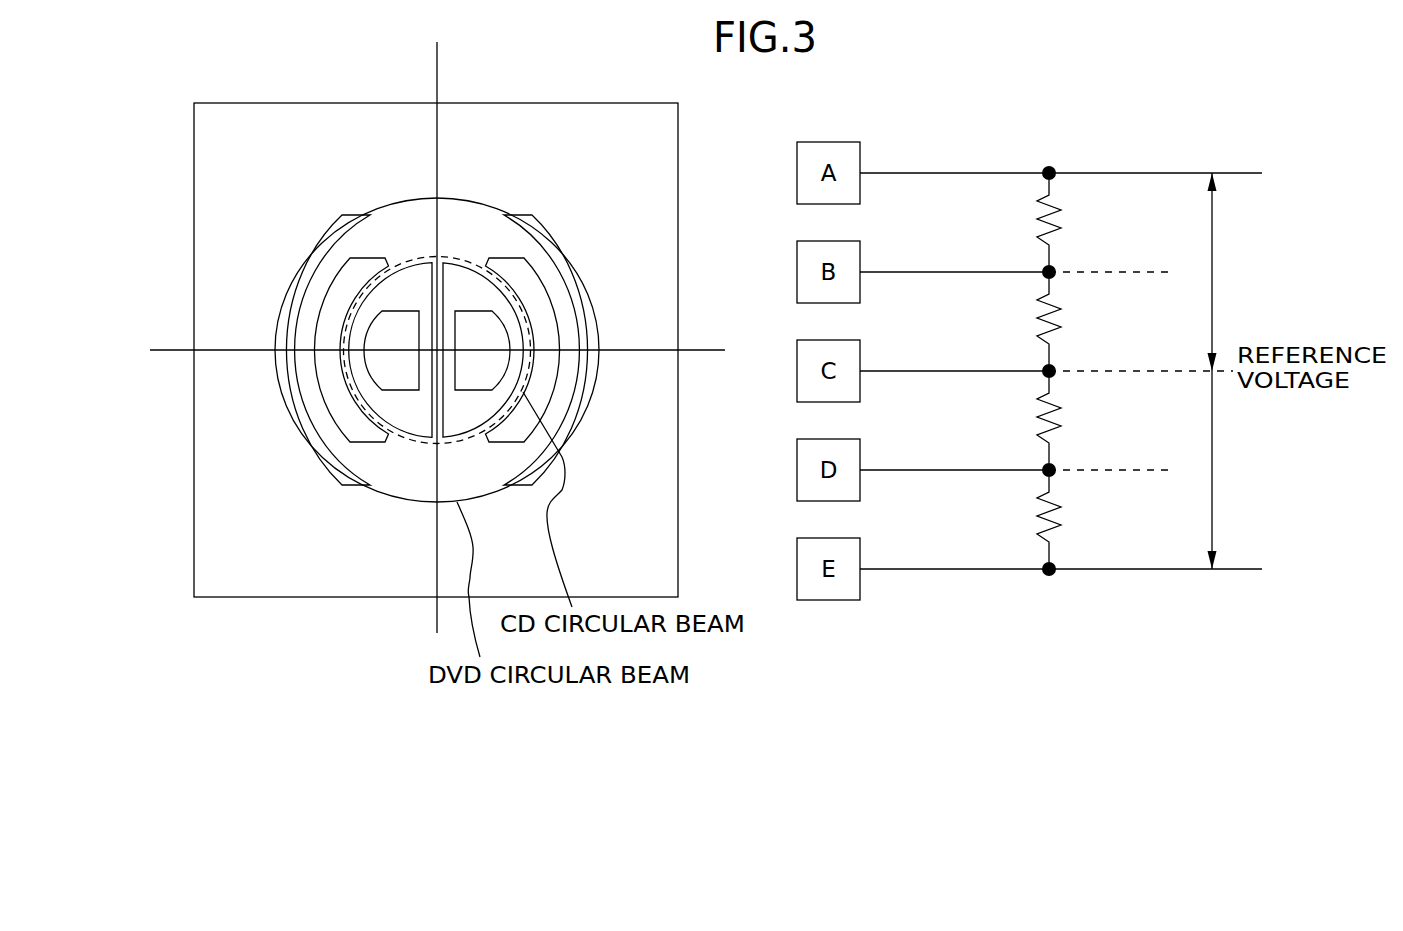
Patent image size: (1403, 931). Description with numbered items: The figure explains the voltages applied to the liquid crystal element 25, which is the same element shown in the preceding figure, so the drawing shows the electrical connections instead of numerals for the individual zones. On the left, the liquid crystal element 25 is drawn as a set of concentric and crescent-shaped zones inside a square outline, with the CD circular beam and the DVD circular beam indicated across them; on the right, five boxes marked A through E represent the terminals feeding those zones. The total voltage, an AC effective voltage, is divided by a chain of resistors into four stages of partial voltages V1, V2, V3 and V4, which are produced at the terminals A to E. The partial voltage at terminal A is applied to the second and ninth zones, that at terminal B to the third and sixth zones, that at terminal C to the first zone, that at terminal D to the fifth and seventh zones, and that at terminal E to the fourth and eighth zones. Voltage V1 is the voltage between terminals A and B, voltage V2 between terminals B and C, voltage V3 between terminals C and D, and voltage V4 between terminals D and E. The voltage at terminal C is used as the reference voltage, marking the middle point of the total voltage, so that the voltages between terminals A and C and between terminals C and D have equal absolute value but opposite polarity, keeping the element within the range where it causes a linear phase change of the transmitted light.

The liquid crystal element 25 is at (183, 609).
The terminal A is at (411, 387).
The terminal B is at (410, 423).
The terminal C is at (436, 348).
The terminal D is at (462, 277).
The terminal E is at (457, 313).
The voltage V1 is at (1123, 173).
The voltage V2 is at (1123, 272).
The voltage V3 is at (1123, 371).
The voltage V4 is at (1123, 470).